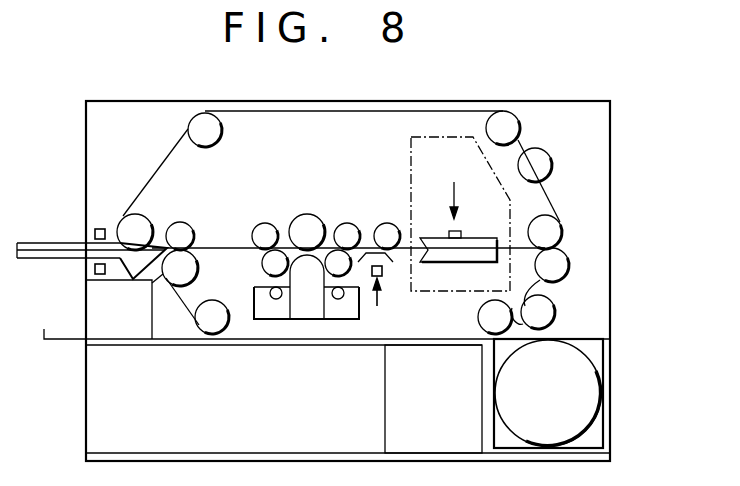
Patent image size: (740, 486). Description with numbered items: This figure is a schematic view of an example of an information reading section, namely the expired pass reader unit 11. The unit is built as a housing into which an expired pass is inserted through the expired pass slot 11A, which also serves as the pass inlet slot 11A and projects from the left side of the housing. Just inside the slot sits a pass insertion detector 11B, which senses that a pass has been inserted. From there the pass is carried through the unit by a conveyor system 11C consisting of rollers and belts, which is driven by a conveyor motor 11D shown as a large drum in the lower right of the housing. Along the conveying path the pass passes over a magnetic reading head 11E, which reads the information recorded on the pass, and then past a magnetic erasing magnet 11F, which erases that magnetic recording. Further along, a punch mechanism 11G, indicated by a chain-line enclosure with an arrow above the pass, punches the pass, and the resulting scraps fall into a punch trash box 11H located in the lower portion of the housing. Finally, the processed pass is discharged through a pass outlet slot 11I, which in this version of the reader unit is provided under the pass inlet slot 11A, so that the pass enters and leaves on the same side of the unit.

The expired pass reader unit 11 is at (612, 122).
The expired pass slot 11A is at (46, 243).
The pass insertion detector 11B is at (101, 229).
The conveyor system 11C is at (548, 205).
The conveyor motor 11D is at (562, 372).
The magnetic reading head 11E is at (304, 318).
The magnetic erasing magnet 11F is at (384, 274).
The punch mechanism 11G is at (422, 152).
The punch trash box 11H is at (437, 365).
The pass outlet slot 11I is at (57, 341).